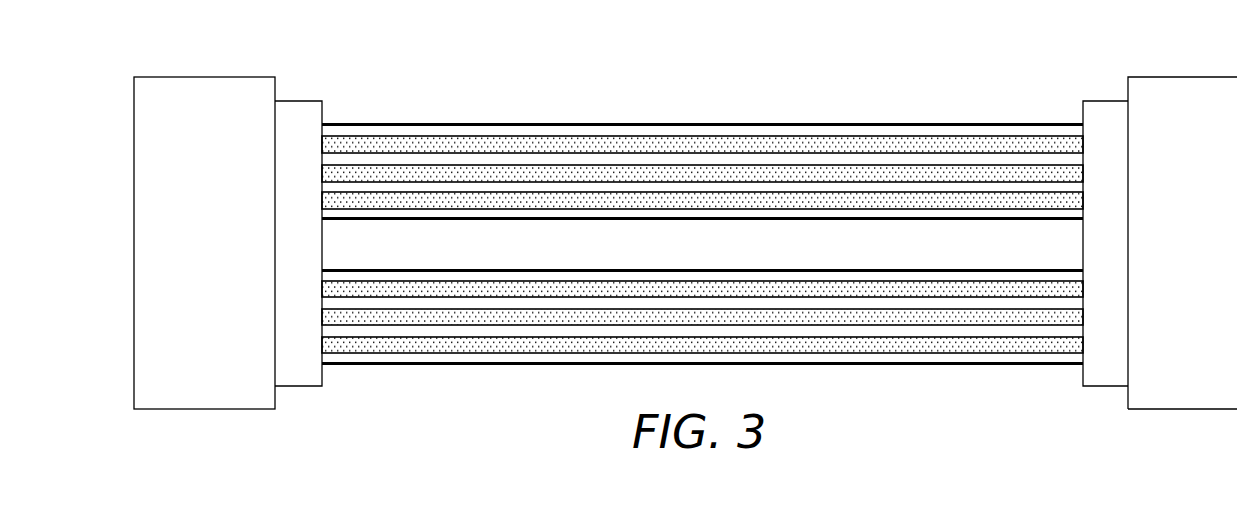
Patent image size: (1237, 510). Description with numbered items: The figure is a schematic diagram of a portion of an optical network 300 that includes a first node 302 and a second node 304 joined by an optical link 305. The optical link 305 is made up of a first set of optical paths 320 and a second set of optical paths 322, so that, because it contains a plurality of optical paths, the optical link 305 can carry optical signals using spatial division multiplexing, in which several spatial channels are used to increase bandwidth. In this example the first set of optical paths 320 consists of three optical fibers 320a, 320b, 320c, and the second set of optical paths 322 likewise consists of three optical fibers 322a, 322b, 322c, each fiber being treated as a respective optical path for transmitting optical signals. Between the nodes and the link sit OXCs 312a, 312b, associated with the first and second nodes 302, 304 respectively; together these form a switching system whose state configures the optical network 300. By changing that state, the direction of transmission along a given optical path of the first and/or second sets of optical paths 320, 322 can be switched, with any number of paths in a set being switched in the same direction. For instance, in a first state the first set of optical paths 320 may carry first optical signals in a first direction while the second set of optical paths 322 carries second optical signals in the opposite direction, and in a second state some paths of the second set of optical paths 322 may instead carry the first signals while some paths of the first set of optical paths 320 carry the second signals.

The optical network 300 is at (384, 59).
The first node 302 is at (186, 256).
The second node 304 is at (1178, 256).
The optical link 305 is at (1079, 93).
The OXC 312a is at (297, 101).
The OXC 312b is at (1101, 101).
The first set of optical paths 320 is at (702, 158).
The optical fiber 320a is at (525, 143).
The optical fiber 320b is at (652, 165).
The optical fiber 320c is at (757, 193).
The second set of optical paths 322 is at (702, 335).
The optical fiber 322a is at (535, 353).
The optical fiber 322b is at (680, 326).
The optical fiber 322c is at (780, 297).